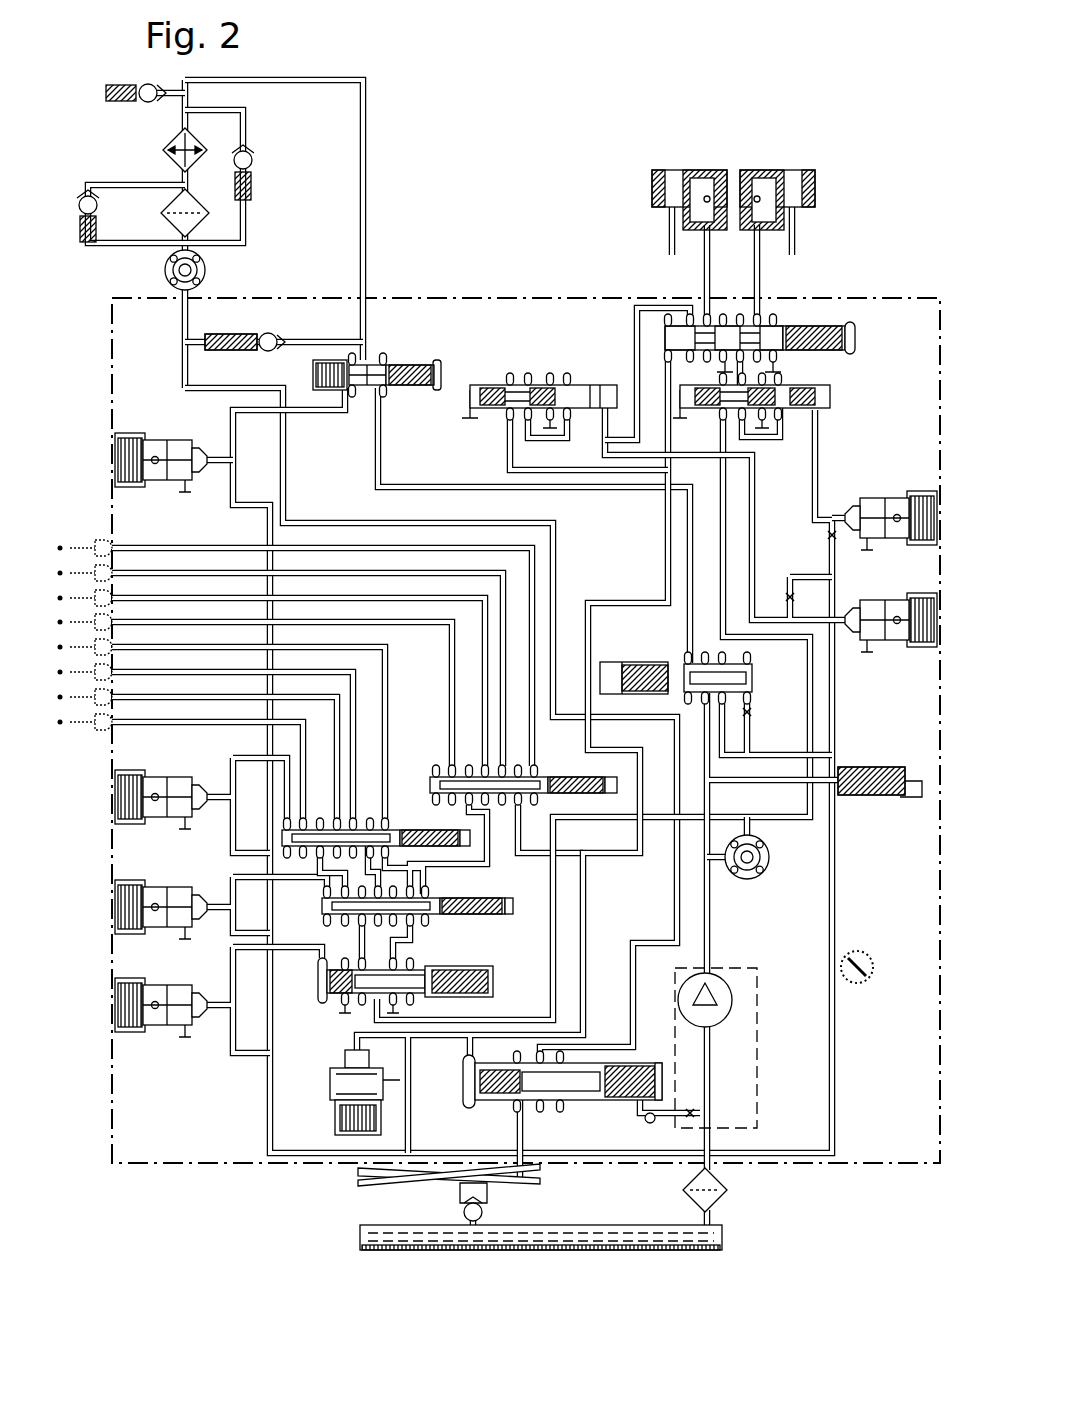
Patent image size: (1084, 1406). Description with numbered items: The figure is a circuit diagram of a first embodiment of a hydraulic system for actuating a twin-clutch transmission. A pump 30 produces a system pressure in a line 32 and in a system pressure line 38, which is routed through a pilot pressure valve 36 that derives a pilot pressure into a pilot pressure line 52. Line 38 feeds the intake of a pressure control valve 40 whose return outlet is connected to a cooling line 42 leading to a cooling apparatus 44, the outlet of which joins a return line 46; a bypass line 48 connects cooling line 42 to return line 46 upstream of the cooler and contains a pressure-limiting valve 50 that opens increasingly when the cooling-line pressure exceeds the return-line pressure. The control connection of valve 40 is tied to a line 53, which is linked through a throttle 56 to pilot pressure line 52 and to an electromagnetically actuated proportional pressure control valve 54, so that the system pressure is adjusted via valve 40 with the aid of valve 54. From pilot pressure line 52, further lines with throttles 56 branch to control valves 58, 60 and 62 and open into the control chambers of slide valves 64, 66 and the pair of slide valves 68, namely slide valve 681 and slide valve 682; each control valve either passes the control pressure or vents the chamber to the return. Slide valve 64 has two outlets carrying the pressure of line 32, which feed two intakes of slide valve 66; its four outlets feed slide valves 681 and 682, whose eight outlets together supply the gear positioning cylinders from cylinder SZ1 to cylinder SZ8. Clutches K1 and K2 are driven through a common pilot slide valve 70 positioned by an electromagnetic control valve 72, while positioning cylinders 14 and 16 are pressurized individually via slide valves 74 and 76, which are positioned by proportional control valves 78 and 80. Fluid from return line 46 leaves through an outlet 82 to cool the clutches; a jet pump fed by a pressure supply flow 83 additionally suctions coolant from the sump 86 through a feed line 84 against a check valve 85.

The positioning cylinder 14 is at (712, 180).
The positioning cylinder 16 is at (760, 180).
The pump 30 is at (733, 1005).
The line 32 is at (555, 915).
The pilot pressure valve 36 is at (642, 662).
The system pressure line 38 is at (382, 458).
The pressure control valve 40 is at (395, 358).
The cooling line 42 is at (365, 250).
The cooling apparatus 44 is at (163, 152).
The return line 46 is at (183, 370).
The bypass line 48 is at (320, 340).
The pressure-limiting valve 50 is at (232, 335).
The pilot pressure line 52 is at (267, 1127).
The line 53 is at (232, 412).
The pressure control valve 54 is at (116, 462).
The throttle 56 is at (232, 505).
The control valve 58 is at (116, 1005).
The control valve 60 is at (116, 907).
The control valve 62 is at (116, 797).
The slide valve 64 is at (493, 982).
The slide valve 66 is at (322, 908).
The slide valves 68 is at (449, 795).
The slide valve 681 is at (402, 826).
The slide valve 682 is at (552, 777).
The pilot slide valve 70 is at (855, 338).
The electromagnetic control valve 72 is at (352, 1128).
The slide valve 74 is at (545, 385).
The slide valve 76 is at (832, 396).
The control valve 78 is at (901, 496).
The control valve 80 is at (902, 648).
The outlet 82 is at (375, 1188).
The pressure supply flow 83 is at (438, 1185).
The feed line 84 is at (505, 1180).
The check valve 85 is at (490, 1213).
The sump 86 is at (605, 1228).
The clutch K1 is at (657, 173).
The clutch K2 is at (811, 173).
The positioning cylinder SZ1 is at (80, 531).
The positioning cylinder SZ8 is at (80, 741).